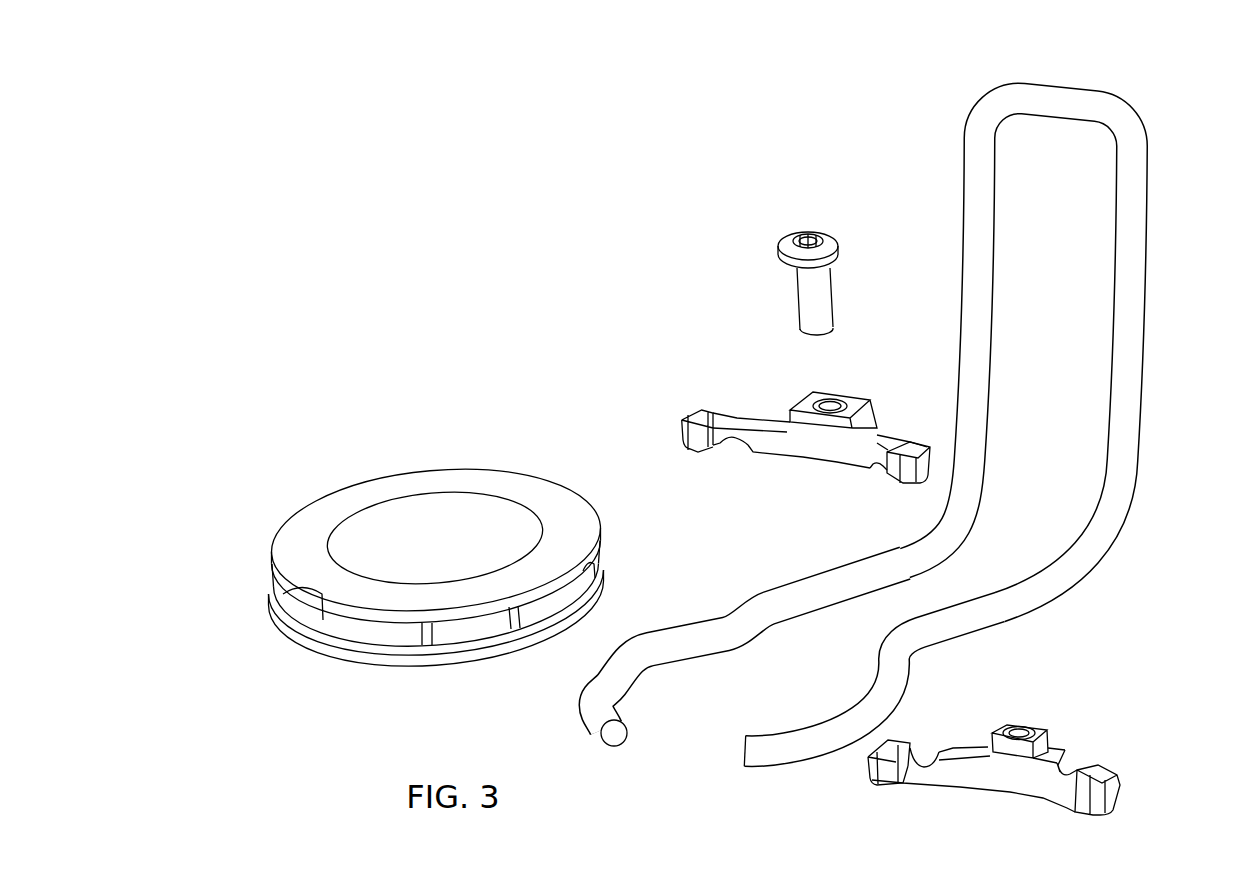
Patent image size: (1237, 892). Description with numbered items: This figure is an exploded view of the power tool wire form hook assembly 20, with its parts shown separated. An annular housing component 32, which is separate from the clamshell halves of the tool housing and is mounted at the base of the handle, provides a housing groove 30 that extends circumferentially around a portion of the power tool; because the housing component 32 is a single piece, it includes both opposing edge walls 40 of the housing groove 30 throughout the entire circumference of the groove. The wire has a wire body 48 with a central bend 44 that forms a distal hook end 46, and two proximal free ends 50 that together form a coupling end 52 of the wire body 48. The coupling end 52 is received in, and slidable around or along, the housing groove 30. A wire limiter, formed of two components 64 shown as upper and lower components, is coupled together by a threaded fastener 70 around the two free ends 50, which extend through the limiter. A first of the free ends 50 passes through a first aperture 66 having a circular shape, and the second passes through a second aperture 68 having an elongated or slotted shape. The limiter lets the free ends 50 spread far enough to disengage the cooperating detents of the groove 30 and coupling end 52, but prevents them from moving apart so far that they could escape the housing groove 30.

The cable management assembly 20 is at (419, 151).
The housing groove 30 is at (398, 648).
The housing component 32 is at (418, 440).
The opposing edge walls 40 is at (306, 612).
The central bend 44 is at (1034, 90).
The distal hook end 46 is at (1167, 285).
The wire body 48 is at (1103, 70).
The proximal free ends 50 is at (600, 684).
The coupling end 52 is at (947, 682).
The components of wire limiter 64 is at (683, 437).
The first aperture 66 is at (877, 470).
The second aperture 68 is at (730, 447).
The threaded fastener 70 is at (780, 254).